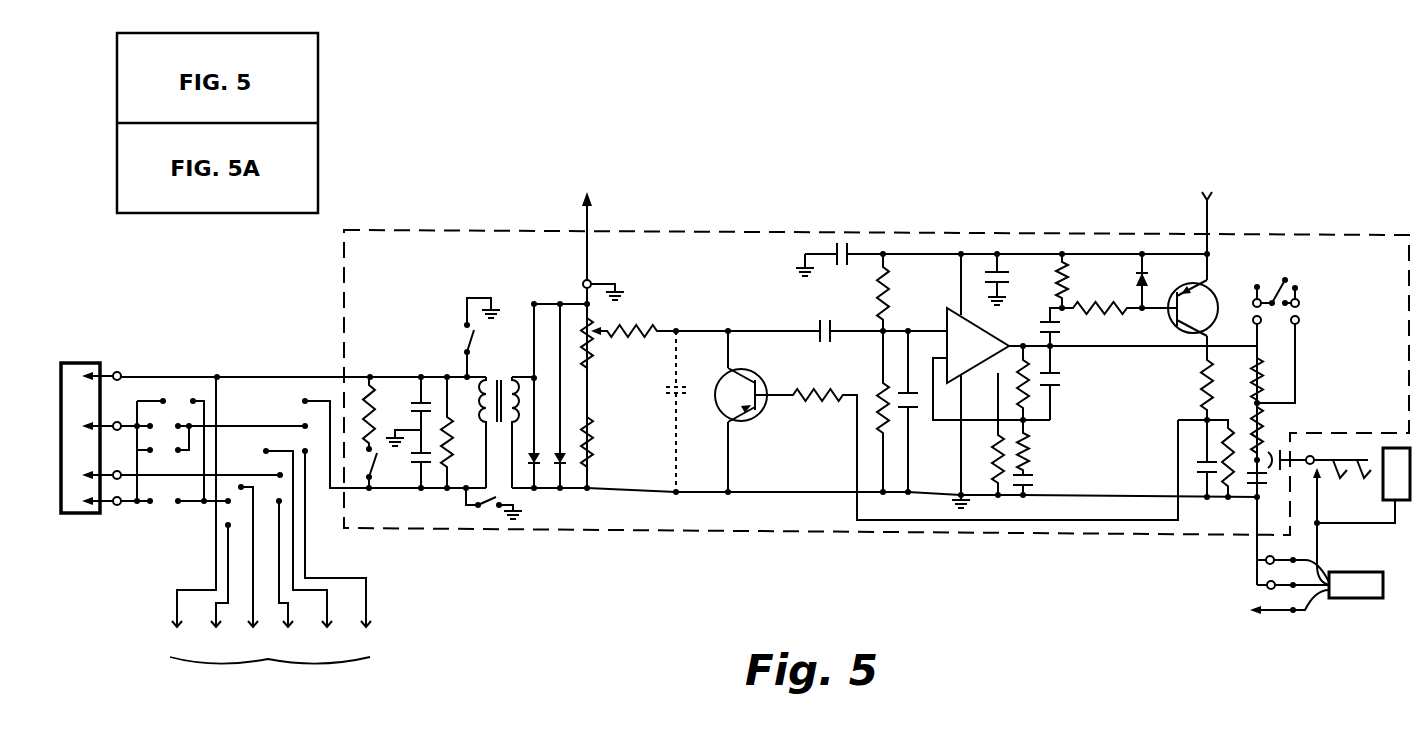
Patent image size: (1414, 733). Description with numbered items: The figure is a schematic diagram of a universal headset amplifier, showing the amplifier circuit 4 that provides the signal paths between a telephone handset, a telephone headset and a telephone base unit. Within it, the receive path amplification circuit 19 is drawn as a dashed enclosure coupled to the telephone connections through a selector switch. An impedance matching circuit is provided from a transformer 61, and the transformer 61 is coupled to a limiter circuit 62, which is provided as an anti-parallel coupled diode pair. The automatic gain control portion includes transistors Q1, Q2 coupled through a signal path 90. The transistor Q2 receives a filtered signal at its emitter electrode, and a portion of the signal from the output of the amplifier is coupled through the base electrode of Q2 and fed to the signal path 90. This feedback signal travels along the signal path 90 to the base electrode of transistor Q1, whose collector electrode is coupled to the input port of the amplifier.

The amplifier circuit 4 is at (1034, 153).
The receive path amplification circuit 19 is at (1313, 234).
The transformer 61 is at (500, 366).
The limiter circuit 62 is at (551, 325).
The signal path 90 is at (1178, 447).
The transistor Q1 is at (763, 431).
The transistor Q2 is at (1233, 282).